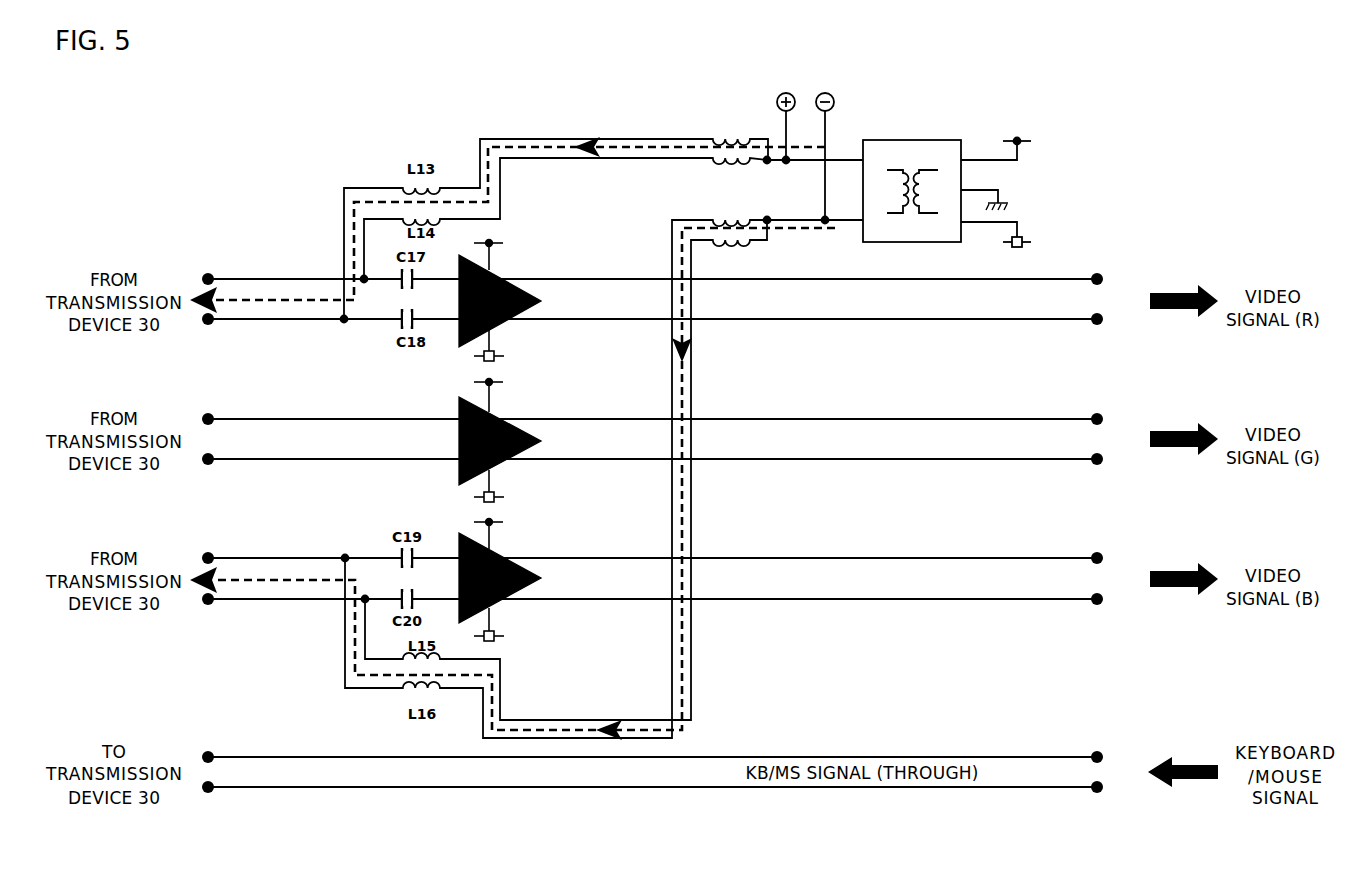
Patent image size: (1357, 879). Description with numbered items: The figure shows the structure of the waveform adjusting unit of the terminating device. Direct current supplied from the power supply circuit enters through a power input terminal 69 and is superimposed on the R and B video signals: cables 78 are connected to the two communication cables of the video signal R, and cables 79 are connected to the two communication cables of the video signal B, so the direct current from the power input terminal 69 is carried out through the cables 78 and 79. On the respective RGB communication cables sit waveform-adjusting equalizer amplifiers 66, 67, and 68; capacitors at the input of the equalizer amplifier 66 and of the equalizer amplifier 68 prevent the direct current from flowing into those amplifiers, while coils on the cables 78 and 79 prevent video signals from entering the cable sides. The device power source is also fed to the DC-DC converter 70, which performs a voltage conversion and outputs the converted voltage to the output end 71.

The equalizer amplifier 66 is at (505, 278).
The equalizer amplifier 67 is at (500, 417).
The equalizer amplifier 68 is at (507, 558).
The power input terminal 69 is at (807, 136).
The DC-DC converter 70 is at (961, 140).
The output end 71 is at (1064, 142).
The cables 78 is at (545, 139).
The cables 79 is at (671, 378).